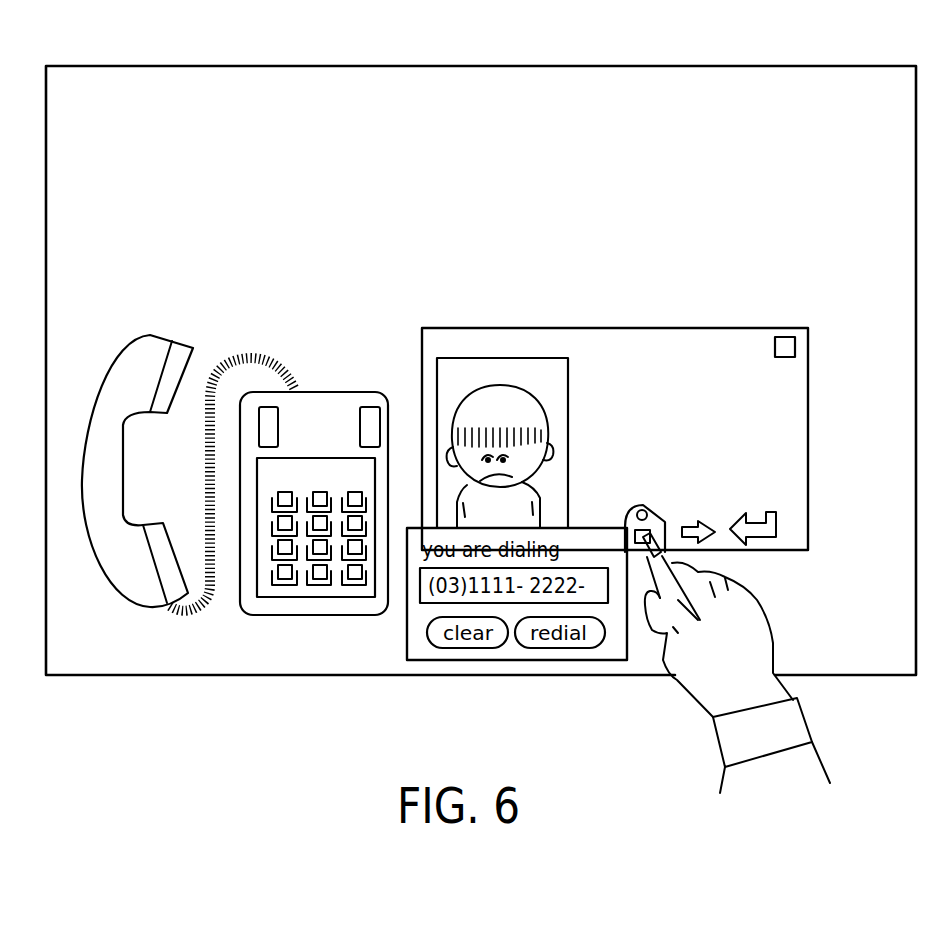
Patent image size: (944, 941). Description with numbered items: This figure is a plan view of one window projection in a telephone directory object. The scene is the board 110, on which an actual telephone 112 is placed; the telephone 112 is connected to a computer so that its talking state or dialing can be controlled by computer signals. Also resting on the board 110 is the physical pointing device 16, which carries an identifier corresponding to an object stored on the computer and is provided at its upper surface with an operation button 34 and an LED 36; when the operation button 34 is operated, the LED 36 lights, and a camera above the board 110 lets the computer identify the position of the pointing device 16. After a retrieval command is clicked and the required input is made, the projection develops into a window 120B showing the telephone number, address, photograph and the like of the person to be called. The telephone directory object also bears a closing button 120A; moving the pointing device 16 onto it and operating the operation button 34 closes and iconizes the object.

The board 110 is at (477, 75).
The telephone 112 is at (332, 402).
The window 120B is at (683, 337).
The closing button 120A is at (787, 335).
The operation button 34 is at (625, 522).
The LED 36 is at (648, 513).
The pointing device 16 is at (676, 521).